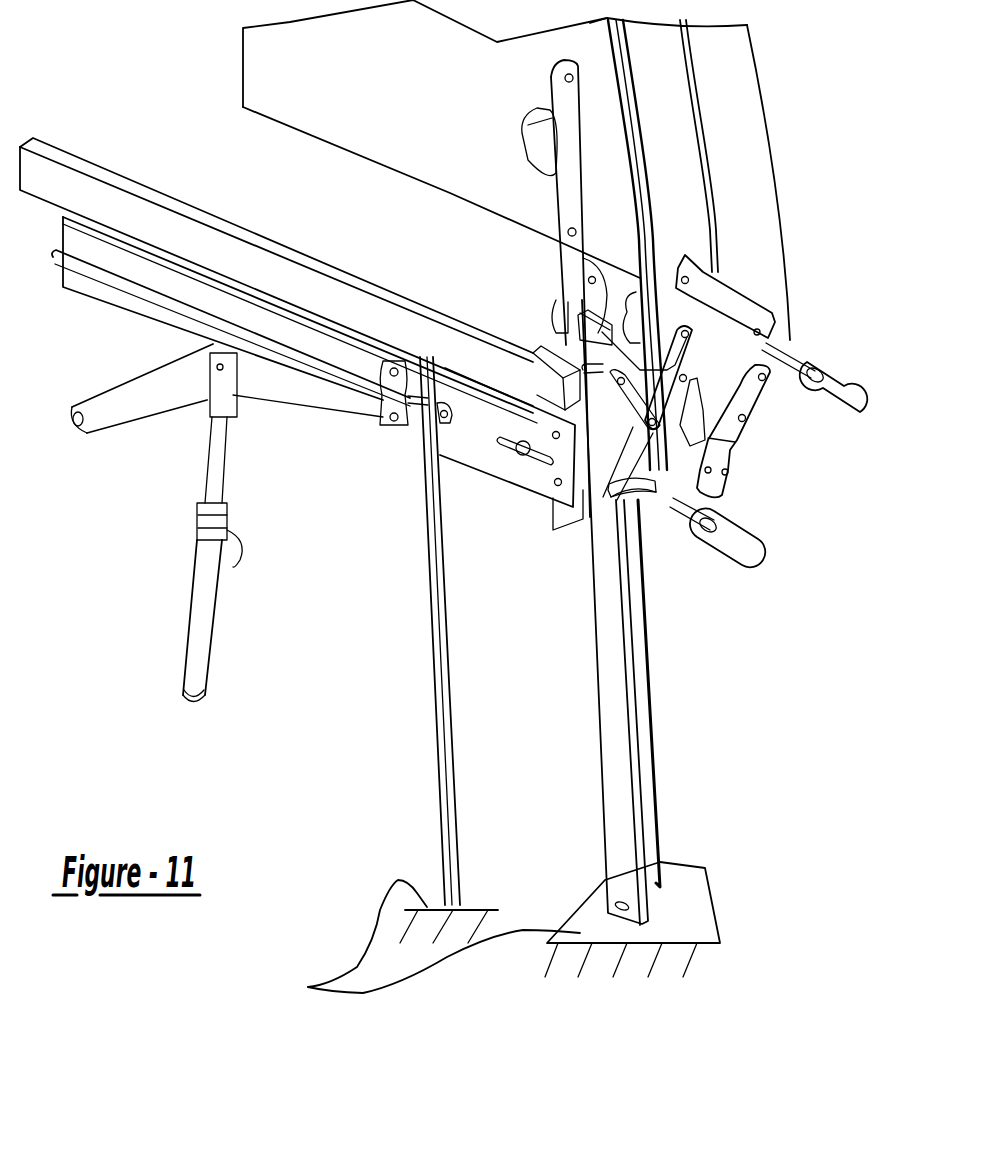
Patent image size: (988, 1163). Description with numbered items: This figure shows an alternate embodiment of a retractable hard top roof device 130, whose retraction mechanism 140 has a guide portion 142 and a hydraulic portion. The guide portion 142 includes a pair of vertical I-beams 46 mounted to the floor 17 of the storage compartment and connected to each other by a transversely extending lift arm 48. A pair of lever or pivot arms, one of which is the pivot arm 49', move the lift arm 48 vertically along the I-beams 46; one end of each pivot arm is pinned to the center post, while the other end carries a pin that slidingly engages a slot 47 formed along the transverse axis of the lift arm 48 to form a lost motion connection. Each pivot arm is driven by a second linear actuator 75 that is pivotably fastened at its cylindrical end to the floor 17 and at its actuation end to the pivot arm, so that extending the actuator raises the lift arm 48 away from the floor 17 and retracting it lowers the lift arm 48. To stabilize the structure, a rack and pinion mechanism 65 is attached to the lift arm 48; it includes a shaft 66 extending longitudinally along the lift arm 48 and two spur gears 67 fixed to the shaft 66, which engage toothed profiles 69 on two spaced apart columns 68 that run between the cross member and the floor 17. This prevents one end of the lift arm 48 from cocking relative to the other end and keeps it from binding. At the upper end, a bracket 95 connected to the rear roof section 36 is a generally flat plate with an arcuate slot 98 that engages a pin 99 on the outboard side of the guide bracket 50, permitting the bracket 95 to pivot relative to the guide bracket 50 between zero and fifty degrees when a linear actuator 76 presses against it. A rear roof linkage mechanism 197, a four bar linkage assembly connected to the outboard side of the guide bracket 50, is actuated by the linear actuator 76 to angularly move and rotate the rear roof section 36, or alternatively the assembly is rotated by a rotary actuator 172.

The rear roof section 36 is at (747, 90).
The retractable hard top roof device 130 is at (803, 160).
The rear roof linkage mechanism 197 is at (798, 334).
The rotary actuator 172 is at (830, 393).
The bracket 95 is at (660, 460).
The guide bracket 50 is at (780, 409).
The linear actuator 76 is at (720, 522).
The retraction mechanism 140 is at (740, 558).
The pin 99 is at (653, 495).
The arcuate slot 98 is at (610, 497).
The vertical I-beam 46 is at (650, 640).
The guide portion 142 is at (711, 706).
The lift arm 48 is at (73, 237).
The shaft 66 is at (123, 290).
The pivot arm 49' is at (227, 425).
The second linear actuator 75 is at (217, 623).
The rack and pinion mechanism 65 is at (407, 472).
The spur gear 67 is at (440, 413).
The slot 47 is at (547, 458).
The column 68 is at (433, 757).
The toothed profile 69 is at (450, 677).
The floor 17 is at (499, 935).